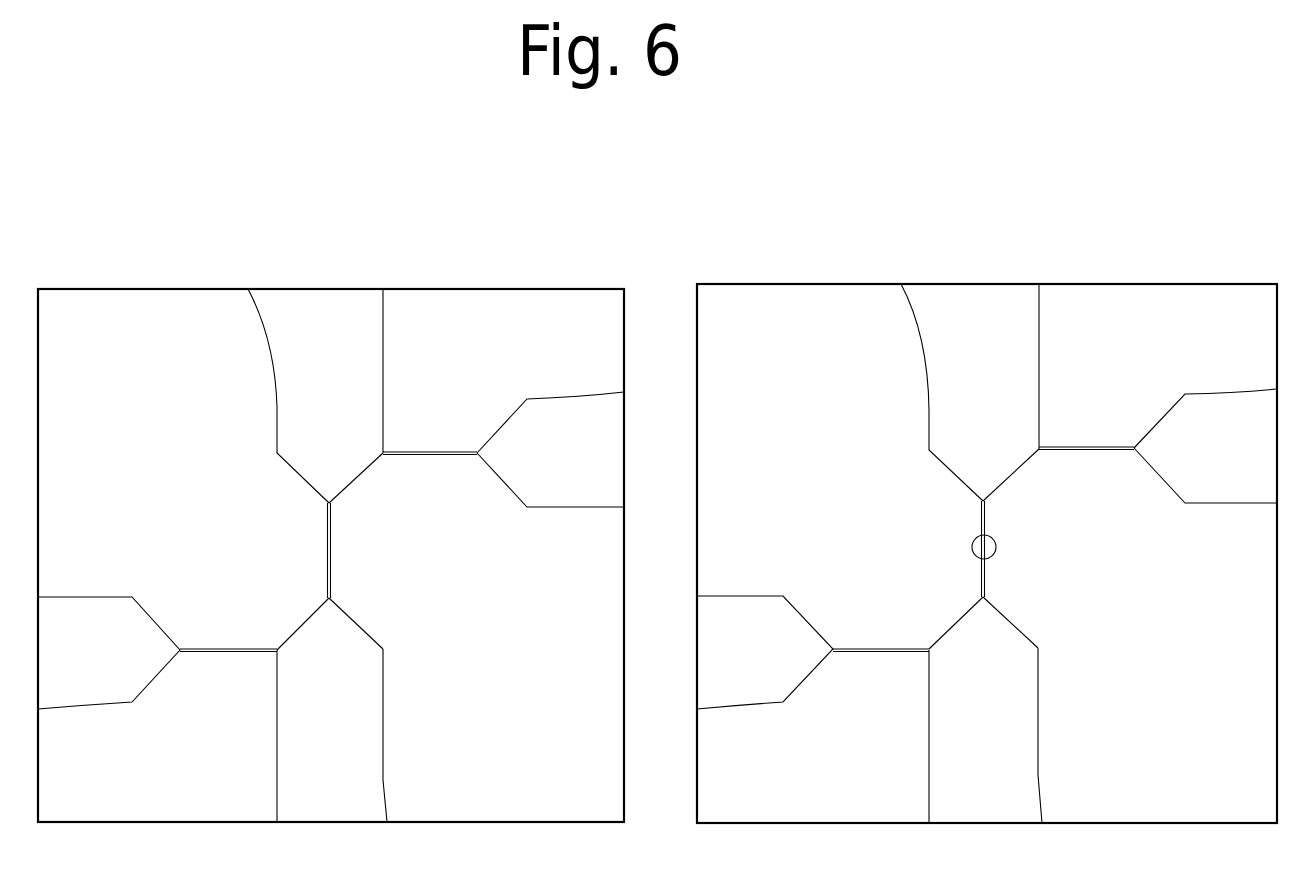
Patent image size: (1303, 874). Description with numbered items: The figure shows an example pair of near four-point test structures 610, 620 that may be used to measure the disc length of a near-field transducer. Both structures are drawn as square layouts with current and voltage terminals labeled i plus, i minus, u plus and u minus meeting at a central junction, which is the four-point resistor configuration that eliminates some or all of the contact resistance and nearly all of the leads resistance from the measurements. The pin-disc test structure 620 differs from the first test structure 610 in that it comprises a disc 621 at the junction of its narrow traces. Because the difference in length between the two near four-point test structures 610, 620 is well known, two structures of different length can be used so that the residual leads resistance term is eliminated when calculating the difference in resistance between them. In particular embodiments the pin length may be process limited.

The near four-point test structure 610 is at (336, 294).
The pin-disc test structure 620 is at (985, 293).
The disc 621 is at (972, 548).